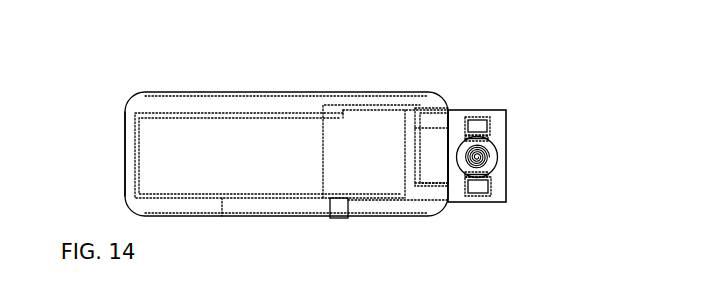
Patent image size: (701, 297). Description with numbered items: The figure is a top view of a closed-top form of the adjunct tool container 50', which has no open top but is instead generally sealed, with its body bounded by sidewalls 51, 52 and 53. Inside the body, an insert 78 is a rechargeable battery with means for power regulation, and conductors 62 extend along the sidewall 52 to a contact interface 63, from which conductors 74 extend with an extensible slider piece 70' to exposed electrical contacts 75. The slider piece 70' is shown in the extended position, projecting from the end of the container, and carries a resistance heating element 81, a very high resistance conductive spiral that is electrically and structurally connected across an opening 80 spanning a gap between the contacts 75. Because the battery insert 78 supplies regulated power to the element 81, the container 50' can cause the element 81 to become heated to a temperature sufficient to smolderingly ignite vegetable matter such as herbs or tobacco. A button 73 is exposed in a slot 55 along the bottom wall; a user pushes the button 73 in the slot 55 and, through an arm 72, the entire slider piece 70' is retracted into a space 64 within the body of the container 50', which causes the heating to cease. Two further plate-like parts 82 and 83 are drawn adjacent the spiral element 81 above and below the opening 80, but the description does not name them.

The adjunct tool container 50' is at (283, 121).
The sidewall 51 is at (116, 154).
The sidewall 52 is at (150, 85).
The sidewall 53 is at (195, 225).
The slot 55 is at (248, 223).
The conductors 62 is at (309, 100).
The contact interface 63 is at (425, 98).
The space 64 is at (394, 186).
The extensible slider piece 70' is at (495, 202).
The arm 72 is at (377, 210).
The button 73 is at (344, 228).
The conductors 74 is at (425, 126).
The electrical contacts 75 is at (486, 114).
The insert 78 is at (239, 107).
The opening 80 is at (505, 178).
The resistance heating element 81 is at (504, 148).
The upper plate 82 is at (483, 133).
The lower plate 83 is at (491, 167).